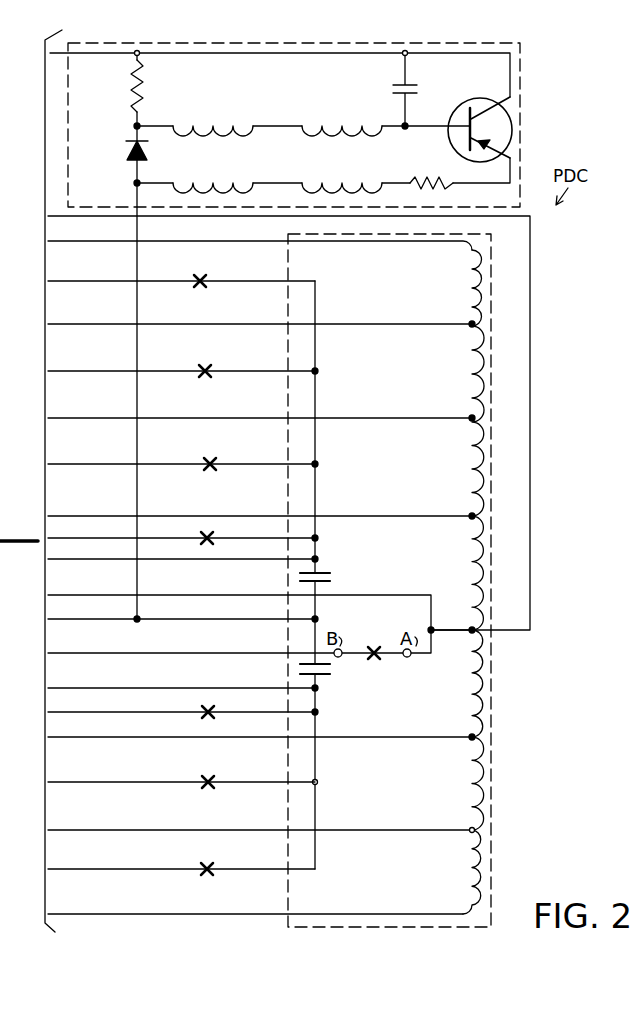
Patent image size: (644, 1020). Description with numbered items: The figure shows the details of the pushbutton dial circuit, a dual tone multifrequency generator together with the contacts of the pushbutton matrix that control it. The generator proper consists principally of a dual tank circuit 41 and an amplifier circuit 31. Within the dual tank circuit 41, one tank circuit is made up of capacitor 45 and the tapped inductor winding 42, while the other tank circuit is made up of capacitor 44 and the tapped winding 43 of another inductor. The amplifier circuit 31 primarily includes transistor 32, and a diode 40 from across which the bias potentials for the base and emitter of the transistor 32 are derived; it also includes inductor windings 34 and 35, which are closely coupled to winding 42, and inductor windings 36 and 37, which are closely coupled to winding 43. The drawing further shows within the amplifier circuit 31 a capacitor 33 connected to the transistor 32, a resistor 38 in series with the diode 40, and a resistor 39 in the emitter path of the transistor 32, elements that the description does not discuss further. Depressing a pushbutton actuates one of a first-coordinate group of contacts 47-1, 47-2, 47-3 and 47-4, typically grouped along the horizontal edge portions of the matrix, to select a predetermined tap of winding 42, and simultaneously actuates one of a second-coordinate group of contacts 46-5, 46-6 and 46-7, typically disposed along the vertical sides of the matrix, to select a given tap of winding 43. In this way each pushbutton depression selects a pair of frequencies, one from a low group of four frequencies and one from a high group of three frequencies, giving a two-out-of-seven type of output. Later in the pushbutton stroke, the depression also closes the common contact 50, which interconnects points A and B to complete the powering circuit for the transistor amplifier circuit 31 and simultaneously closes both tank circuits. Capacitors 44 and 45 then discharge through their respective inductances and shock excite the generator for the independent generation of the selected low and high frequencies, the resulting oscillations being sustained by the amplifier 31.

The amplifier circuit 31 is at (108, 107).
The transistor 32 is at (510, 120).
The capacitor 33 is at (378, 93).
The inductor winding 34 is at (363, 177).
The inductor winding 35 is at (366, 117).
The inductor winding 36 is at (229, 177).
The inductor winding 37 is at (222, 122).
The resistor 38 is at (140, 98).
The resistor 39 is at (436, 168).
The diode 40 is at (125, 152).
The dual tank circuit 41 is at (407, 286).
The tapped inductor winding 42 is at (484, 416).
The tapped winding 43 is at (487, 776).
The capacitor 44 is at (298, 671).
The capacitor 45 is at (345, 578).
The first-coordinate contact 47-1 is at (202, 274).
The first-coordinate contact 47-2 is at (203, 364).
The first-coordinate contact 47-3 is at (208, 457).
The first-coordinate contact 47-4 is at (212, 532).
The second-coordinate contact 46-5 is at (212, 706).
The second-coordinate contact 46-6 is at (208, 776).
The second-coordinate contact 46-7 is at (207, 863).
The common contact 50 is at (374, 652).